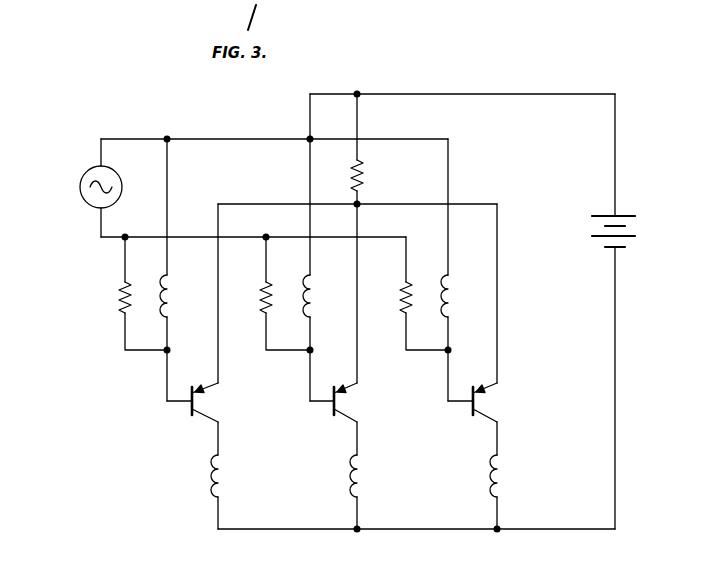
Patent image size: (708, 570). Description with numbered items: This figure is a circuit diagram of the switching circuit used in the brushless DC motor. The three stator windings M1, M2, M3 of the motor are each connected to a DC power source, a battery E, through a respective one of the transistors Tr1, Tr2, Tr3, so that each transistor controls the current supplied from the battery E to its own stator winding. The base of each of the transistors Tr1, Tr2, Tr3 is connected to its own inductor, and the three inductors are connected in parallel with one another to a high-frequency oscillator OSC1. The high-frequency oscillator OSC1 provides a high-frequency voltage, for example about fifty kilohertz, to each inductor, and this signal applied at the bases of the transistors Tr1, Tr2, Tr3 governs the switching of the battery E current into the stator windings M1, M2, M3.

The high-frequency oscillator OSC1 is at (87, 170).
The transistor Tr1 is at (191, 411).
The transistor Tr2 is at (333, 411).
The transistor Tr3 is at (472, 412).
The stator winding M1 is at (223, 482).
The stator winding M2 is at (362, 482).
The stator winding M3 is at (502, 482).
The battery E is at (619, 226).